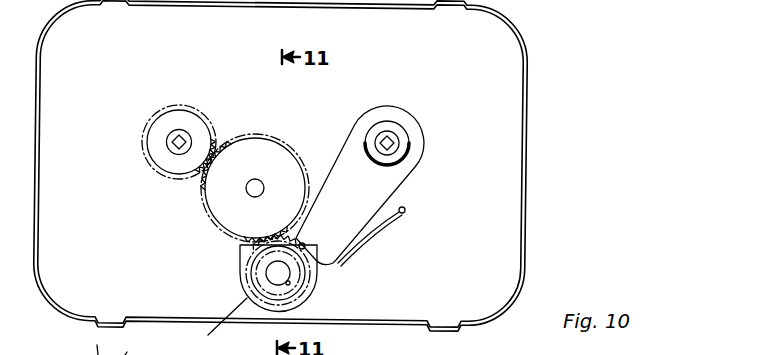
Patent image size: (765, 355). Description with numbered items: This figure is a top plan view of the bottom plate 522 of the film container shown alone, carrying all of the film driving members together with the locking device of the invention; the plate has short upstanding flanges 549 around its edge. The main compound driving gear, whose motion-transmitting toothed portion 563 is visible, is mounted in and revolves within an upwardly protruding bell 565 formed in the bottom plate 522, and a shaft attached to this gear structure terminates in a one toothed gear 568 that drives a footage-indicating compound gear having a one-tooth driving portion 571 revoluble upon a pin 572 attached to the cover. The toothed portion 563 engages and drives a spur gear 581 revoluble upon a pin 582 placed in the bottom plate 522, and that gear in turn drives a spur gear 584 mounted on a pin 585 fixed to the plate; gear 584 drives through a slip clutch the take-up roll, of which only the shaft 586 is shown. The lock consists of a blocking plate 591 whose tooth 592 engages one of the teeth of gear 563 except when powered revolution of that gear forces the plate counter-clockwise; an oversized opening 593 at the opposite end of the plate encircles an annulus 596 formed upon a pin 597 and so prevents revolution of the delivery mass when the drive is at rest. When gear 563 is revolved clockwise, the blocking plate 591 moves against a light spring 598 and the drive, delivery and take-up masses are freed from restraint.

The bottom plate 522 is at (280, 166).
The upstanding flanges 549 is at (526, 207).
The spur gear 584 is at (145, 125).
The pin 585 is at (176, 131).
The shaft 586 is at (184, 133).
The spur gear 581 is at (255, 188).
The pin 582 is at (246, 190).
The toothed portion 563 is at (240, 270).
The bell 565 is at (313, 293).
The one toothed gear 568 is at (277, 281).
The blocking plate 591 is at (360, 185).
The tooth 592 is at (306, 243).
The oversized opening 593 is at (403, 123).
The pin 597 is at (395, 147).
The annulus 596 is at (403, 146).
The light spring 598 is at (373, 231).
The driving portion 571 is at (83, 343).
The pin 572 is at (122, 343).